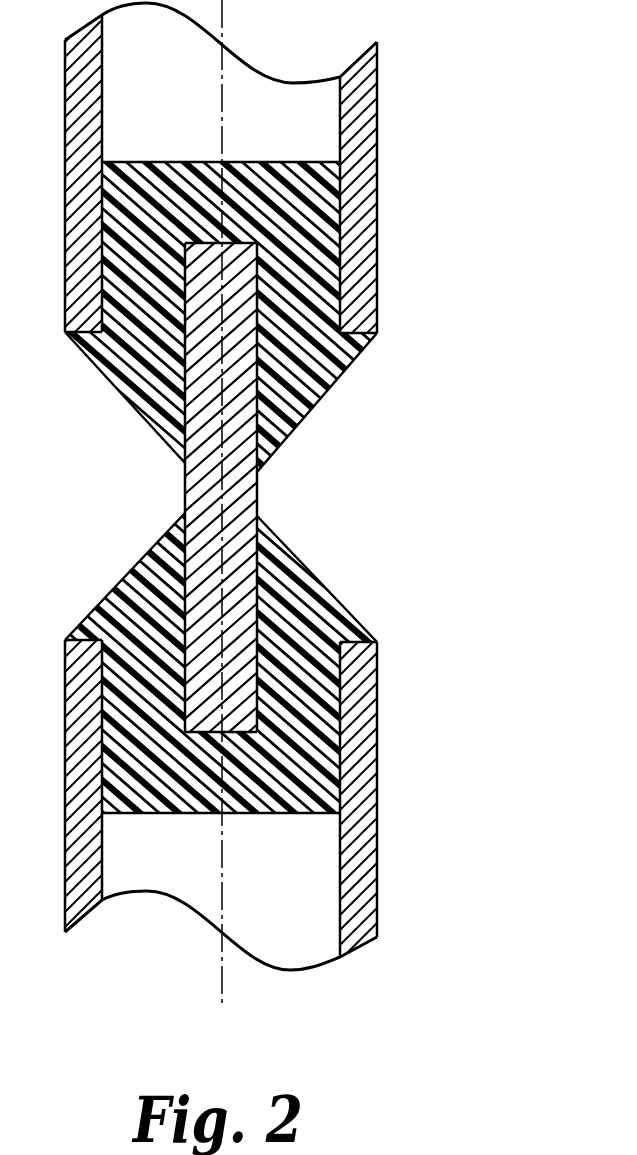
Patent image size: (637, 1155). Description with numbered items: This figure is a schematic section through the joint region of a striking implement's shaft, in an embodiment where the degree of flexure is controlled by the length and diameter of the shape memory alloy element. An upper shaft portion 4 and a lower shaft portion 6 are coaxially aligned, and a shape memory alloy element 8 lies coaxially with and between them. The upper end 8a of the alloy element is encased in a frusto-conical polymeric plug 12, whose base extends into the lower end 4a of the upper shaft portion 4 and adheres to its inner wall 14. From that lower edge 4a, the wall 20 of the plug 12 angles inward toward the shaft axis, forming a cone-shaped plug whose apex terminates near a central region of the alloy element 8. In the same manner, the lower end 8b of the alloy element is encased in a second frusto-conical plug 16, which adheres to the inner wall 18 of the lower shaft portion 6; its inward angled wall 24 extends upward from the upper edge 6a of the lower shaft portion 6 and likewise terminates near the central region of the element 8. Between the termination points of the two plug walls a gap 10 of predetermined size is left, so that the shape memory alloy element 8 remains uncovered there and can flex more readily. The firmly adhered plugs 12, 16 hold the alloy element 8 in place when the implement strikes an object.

The upper shaft portion 4 is at (380, 128).
The lower end of upper shaft portion 4a is at (381, 312).
The lower shaft portion 6 is at (379, 864).
The upper end of lower shaft portion 6a is at (382, 655).
The shape memory alloy element 8 is at (262, 485).
The upper end of shape memory alloy element 8a is at (264, 257).
The lower end of shape memory alloy element 8b is at (262, 695).
The gap 10 is at (150, 472).
The frusto-conical polymeric plug 12 is at (325, 355).
The inner wall of upper shaft portion 14 is at (337, 128).
The second frusto-conical plug 16 is at (288, 553).
The inner wall of lower shaft portion 18 is at (337, 878).
The wall of upper plug 20 is at (315, 419).
The inward angled wall of lower plug 24 is at (342, 591).